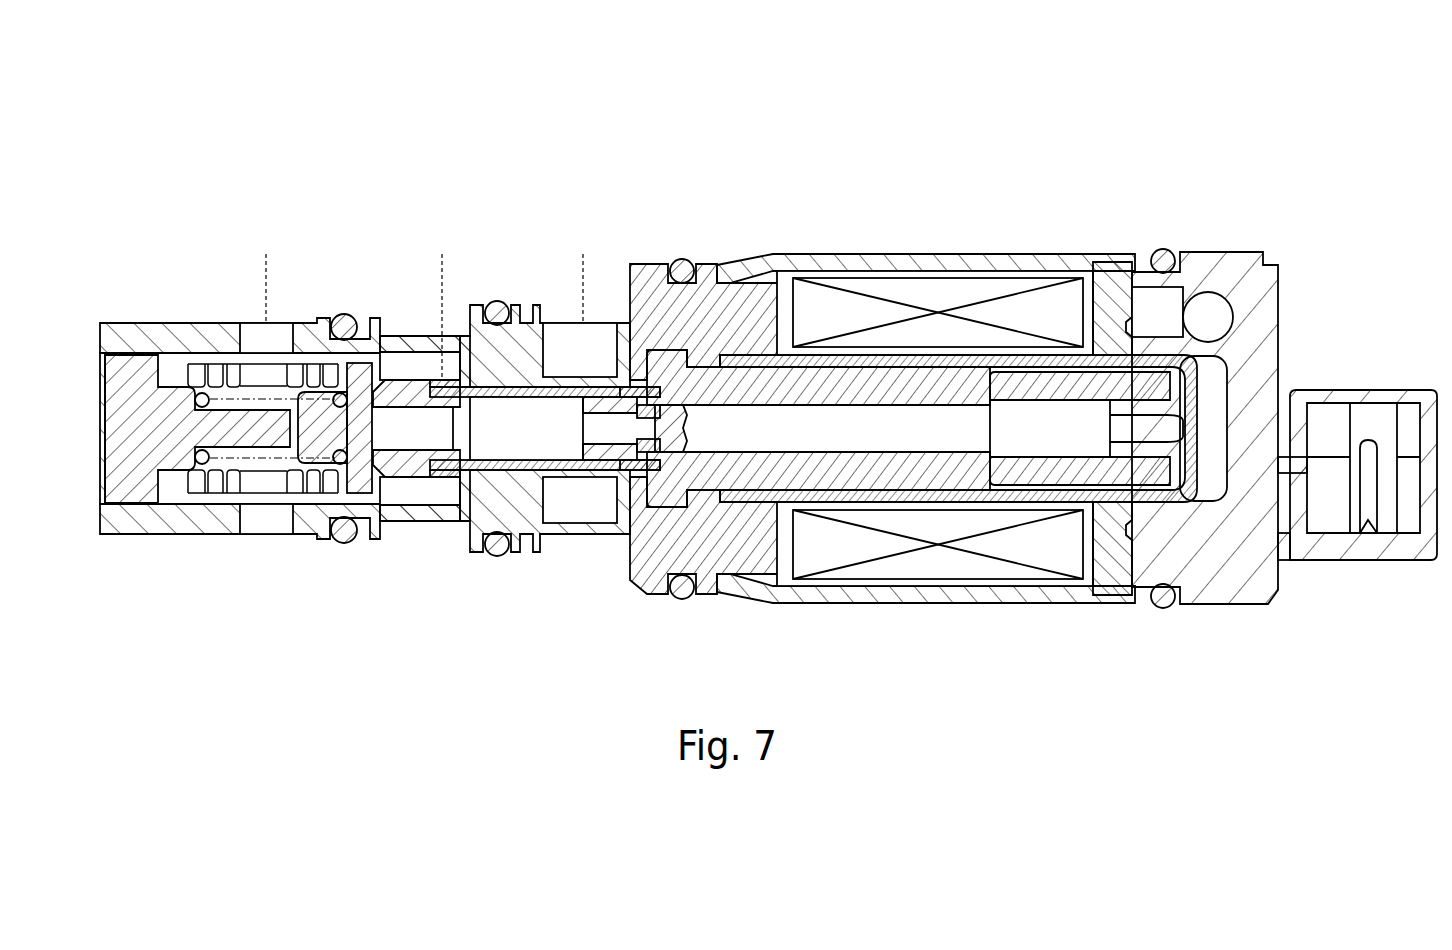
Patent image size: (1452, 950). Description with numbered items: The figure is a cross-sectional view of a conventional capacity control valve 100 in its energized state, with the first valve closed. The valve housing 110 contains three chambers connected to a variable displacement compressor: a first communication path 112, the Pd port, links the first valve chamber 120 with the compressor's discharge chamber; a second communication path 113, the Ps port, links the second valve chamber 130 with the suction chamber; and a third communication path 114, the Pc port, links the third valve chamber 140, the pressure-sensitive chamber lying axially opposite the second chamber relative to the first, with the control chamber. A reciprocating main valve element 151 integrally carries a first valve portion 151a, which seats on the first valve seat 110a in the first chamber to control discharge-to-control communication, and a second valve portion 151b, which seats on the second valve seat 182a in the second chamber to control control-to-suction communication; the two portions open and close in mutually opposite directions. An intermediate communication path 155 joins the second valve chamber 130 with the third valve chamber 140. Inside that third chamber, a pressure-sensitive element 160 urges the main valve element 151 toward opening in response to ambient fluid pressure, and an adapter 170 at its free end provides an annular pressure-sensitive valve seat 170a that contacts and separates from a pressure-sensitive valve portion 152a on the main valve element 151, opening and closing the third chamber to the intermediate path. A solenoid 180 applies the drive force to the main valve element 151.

The capacity control valve 100 is at (1233, 98).
The valve housing 110 is at (150, 308).
The first valve seat 110a is at (410, 378).
The first communication path 112 is at (442, 382).
The second communication path 113 is at (494, 318).
The third communication path 114 is at (257, 352).
The first valve chamber 120 is at (456, 380).
The second valve chamber 130 is at (541, 380).
The third valve chamber 140 is at (200, 363).
The main valve element 151 is at (492, 557).
The first valve portion 151a is at (378, 390).
The second valve portion 151b is at (666, 385).
The pressure-sensitive valve portion 152a is at (363, 494).
The intermediate communication path 155 is at (447, 492).
The pressure-sensitive element 160 is at (208, 500).
The adapter 170 is at (347, 500).
The pressure-sensitive valve seat 170a is at (423, 433).
The solenoid 180 is at (1048, 225).
The second valve seat 182a is at (700, 372).